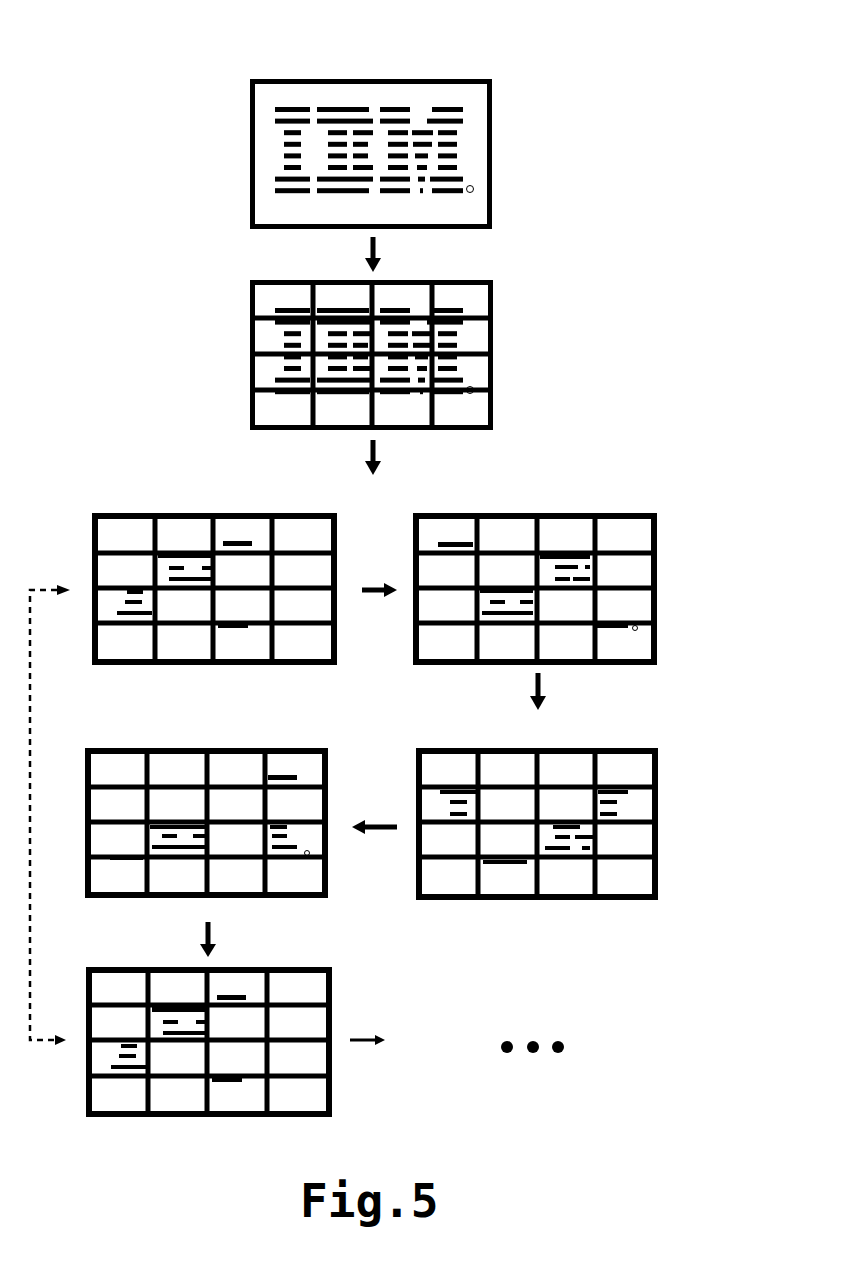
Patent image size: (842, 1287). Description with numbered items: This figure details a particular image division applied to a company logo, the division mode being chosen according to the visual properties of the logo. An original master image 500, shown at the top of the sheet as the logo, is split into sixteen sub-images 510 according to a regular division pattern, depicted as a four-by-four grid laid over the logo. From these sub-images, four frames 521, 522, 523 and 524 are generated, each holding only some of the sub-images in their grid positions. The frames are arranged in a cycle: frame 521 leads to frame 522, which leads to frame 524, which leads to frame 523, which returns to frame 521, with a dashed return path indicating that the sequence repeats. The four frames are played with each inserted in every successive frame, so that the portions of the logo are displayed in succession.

The original master image 500 is at (440, 75).
The sub-images 510 is at (438, 277).
The frame 521 is at (278, 508).
The frame 522 is at (603, 508).
The frame 523 is at (267, 745).
The frame 524 is at (605, 745).